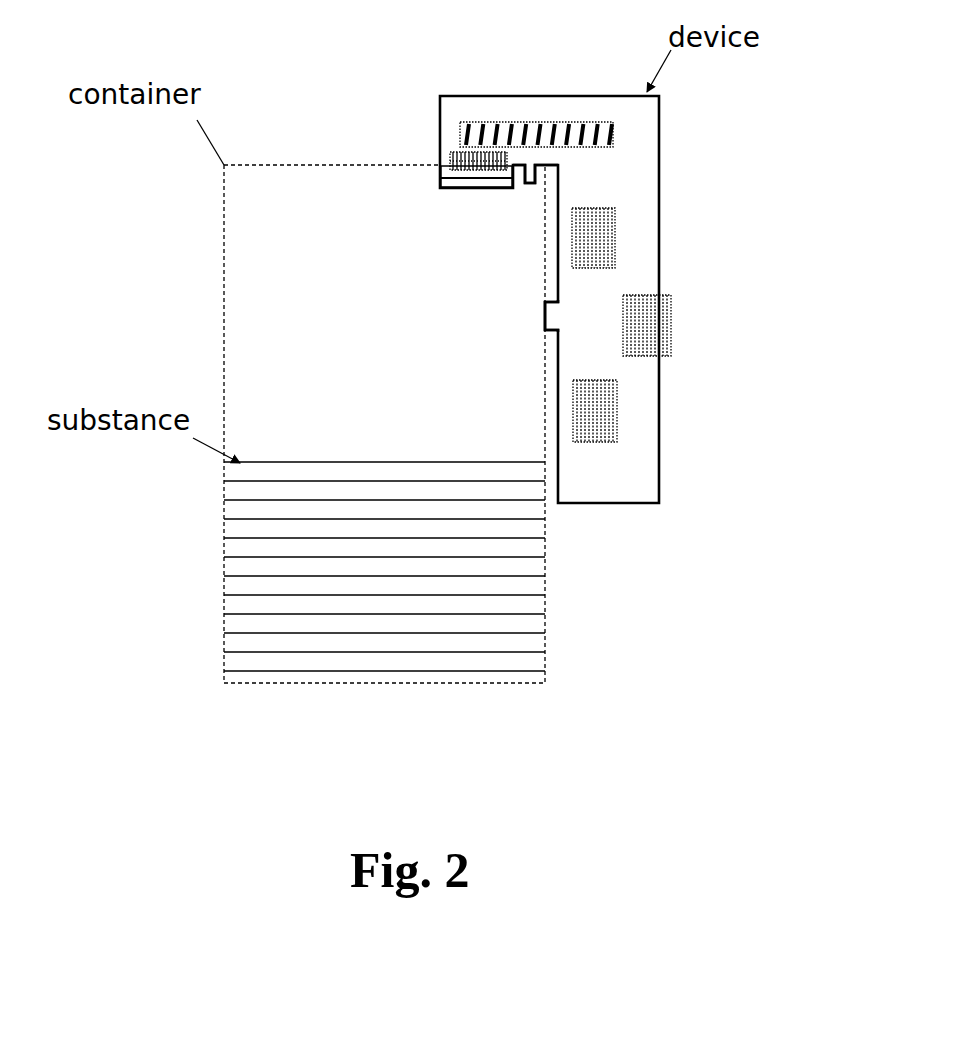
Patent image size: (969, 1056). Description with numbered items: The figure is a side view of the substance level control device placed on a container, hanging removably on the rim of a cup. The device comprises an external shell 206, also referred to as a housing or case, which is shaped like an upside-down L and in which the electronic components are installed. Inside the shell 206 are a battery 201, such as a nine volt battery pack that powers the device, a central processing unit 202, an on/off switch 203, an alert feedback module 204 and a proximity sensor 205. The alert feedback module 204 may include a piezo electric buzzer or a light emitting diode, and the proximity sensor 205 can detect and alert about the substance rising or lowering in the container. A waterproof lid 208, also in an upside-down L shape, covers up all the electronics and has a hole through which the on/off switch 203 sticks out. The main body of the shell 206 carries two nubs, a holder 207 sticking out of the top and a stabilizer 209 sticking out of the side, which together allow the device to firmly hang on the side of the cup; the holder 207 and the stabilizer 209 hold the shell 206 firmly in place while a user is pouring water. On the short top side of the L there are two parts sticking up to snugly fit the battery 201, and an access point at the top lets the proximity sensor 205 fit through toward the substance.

The battery 201 is at (530, 124).
The central processing unit 202 is at (617, 242).
The on/off switch 203 is at (672, 322).
The alert feedback module 204 is at (617, 413).
The proximity sensor 205 is at (453, 158).
The shell 206 is at (645, 505).
The holder 207 is at (530, 183).
The waterproof lid 208 is at (440, 187).
The stabilizer 209 is at (547, 330).